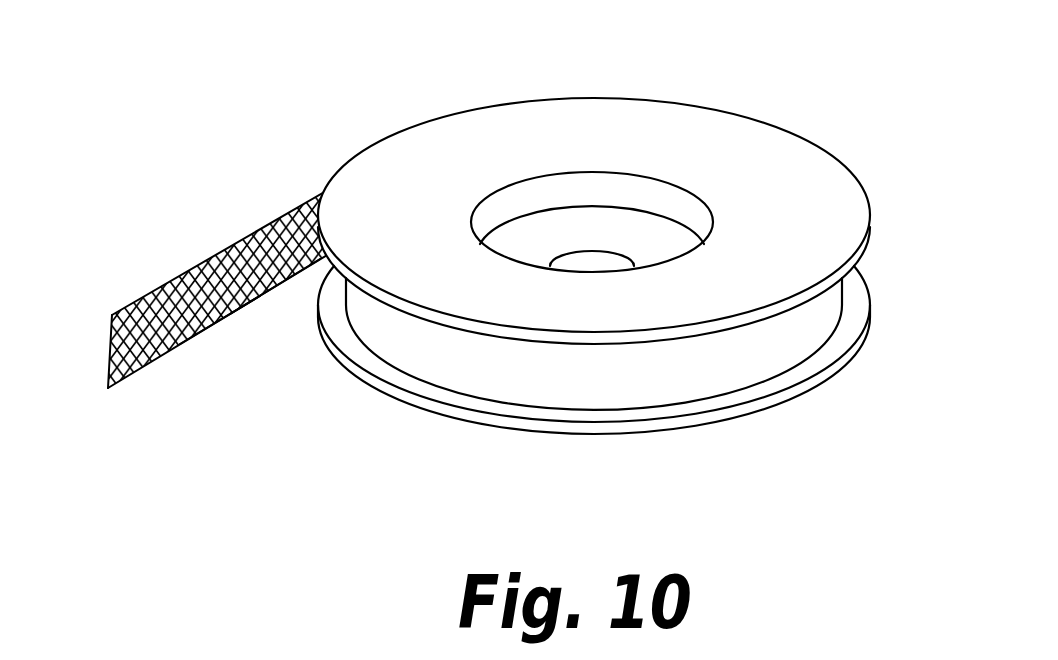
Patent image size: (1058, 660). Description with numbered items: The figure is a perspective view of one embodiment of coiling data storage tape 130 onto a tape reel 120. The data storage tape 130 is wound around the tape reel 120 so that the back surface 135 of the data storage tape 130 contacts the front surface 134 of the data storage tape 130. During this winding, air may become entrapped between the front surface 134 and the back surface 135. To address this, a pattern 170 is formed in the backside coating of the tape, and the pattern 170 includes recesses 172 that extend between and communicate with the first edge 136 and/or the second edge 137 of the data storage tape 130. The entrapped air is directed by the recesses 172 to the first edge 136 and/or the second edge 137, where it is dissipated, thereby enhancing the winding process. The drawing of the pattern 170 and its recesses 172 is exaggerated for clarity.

The tape reel 120 is at (635, 243).
The data storage tape 130 is at (195, 312).
The front surface 134 is at (483, 380).
The back surface 135 is at (185, 345).
The first edge 136 is at (265, 226).
The second edge 137 is at (130, 390).
The pattern 170 is at (238, 354).
The recesses 172 is at (277, 289).